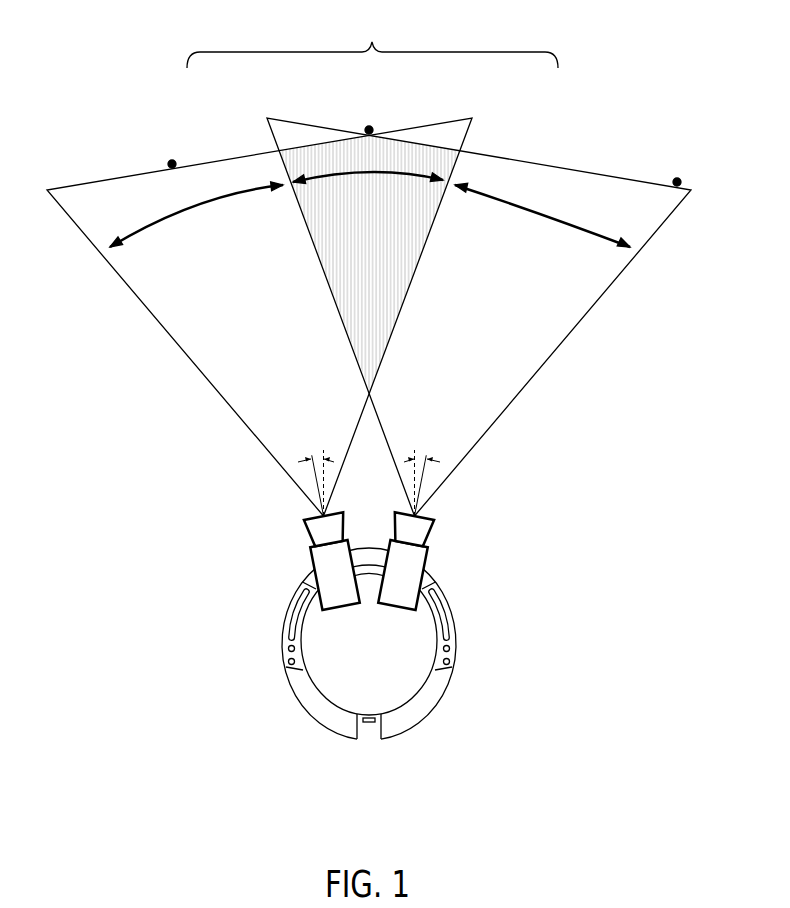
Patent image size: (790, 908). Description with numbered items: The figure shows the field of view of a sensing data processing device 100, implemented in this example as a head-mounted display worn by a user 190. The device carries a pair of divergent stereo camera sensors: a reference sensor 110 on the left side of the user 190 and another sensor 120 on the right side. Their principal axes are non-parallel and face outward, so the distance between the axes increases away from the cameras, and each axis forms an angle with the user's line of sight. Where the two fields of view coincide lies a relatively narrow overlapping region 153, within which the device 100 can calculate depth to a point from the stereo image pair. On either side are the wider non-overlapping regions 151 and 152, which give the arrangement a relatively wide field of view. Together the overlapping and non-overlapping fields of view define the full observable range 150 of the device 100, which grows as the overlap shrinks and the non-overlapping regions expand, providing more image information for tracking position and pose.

The sensing data processing device 100 is at (300, 683).
The reference sensor 110 is at (322, 560).
The other sensor 120 is at (413, 560).
The full observable range 150 is at (372, 39).
The non-overlapping region 151 is at (231, 174).
The non-overlapping region 152 is at (521, 174).
The overlapping region 153 is at (388, 156).
The user 190 is at (393, 680).